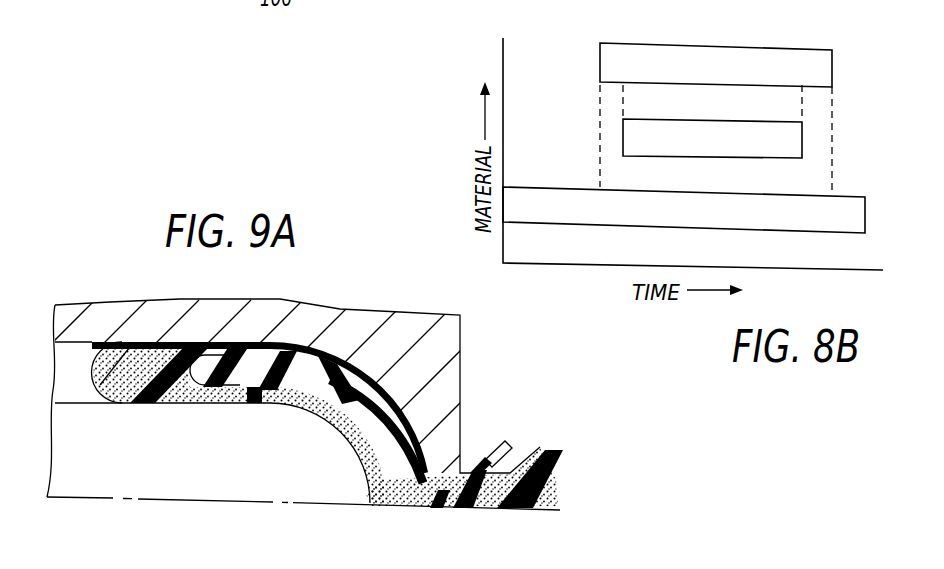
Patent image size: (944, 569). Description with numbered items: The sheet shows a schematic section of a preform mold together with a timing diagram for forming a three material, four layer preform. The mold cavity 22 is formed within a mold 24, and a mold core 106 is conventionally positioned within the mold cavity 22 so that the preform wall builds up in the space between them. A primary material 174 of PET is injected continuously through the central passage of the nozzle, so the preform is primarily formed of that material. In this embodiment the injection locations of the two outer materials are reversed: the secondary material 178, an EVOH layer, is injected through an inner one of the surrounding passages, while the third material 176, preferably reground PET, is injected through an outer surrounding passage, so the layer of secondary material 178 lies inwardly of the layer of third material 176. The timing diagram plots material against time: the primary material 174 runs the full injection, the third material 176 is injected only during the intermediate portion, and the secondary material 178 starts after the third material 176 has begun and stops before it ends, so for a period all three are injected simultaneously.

In FIG. 9A, the mold cavity 22 is at (85, 383).
In FIG. 9A, the mold 24 is at (450, 360).
In FIG. 9A, the mold core 106 is at (192, 488).
In FIG. 9A, the primary material 174 is at (558, 490).
In FIG. 8B, the primary material 174 is at (837, 205).
In FIG. 9A, the third material 176 is at (492, 441).
In FIG. 8B, the third material 176 is at (810, 56).
In FIG. 9A, the secondary material 178 is at (550, 468).
In FIG. 8B, the secondary material 178 is at (795, 138).